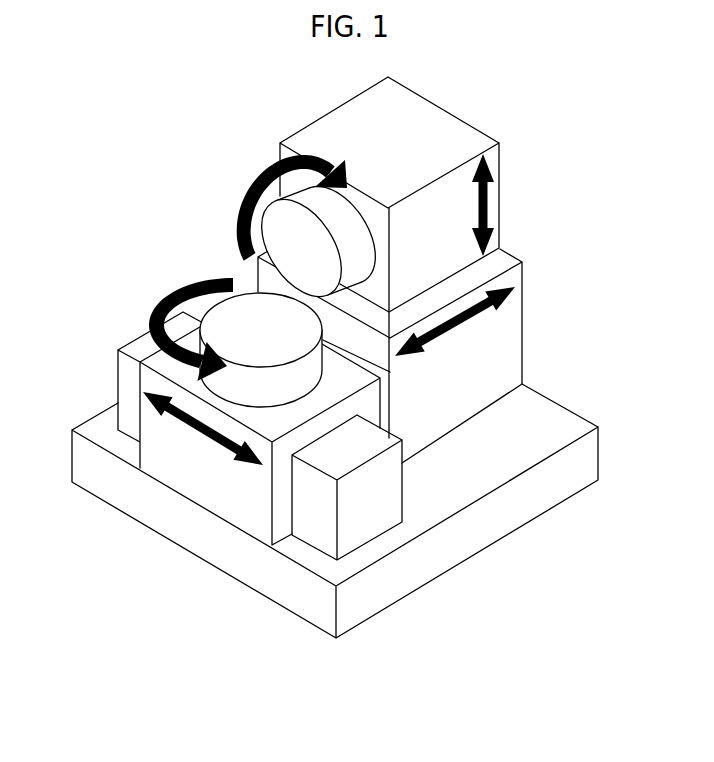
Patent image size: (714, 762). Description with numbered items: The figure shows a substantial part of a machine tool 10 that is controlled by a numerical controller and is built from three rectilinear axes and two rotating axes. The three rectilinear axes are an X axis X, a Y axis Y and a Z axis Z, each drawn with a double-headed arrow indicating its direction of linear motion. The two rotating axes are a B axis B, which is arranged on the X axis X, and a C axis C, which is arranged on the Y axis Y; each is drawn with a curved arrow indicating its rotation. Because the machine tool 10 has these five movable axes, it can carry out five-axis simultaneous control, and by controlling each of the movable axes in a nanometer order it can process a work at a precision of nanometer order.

The machine tool 10 is at (290, 582).
The X axis X is at (254, 428).
The Y axis Y is at (389, 194).
The Z axis Z is at (420, 335).
The B axis B is at (235, 342).
The C axis C is at (306, 233).